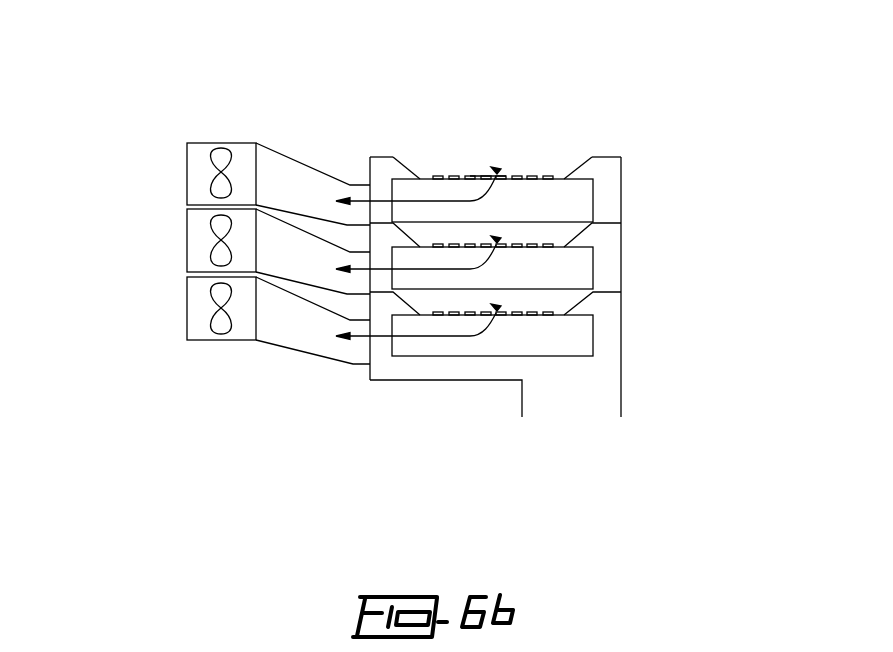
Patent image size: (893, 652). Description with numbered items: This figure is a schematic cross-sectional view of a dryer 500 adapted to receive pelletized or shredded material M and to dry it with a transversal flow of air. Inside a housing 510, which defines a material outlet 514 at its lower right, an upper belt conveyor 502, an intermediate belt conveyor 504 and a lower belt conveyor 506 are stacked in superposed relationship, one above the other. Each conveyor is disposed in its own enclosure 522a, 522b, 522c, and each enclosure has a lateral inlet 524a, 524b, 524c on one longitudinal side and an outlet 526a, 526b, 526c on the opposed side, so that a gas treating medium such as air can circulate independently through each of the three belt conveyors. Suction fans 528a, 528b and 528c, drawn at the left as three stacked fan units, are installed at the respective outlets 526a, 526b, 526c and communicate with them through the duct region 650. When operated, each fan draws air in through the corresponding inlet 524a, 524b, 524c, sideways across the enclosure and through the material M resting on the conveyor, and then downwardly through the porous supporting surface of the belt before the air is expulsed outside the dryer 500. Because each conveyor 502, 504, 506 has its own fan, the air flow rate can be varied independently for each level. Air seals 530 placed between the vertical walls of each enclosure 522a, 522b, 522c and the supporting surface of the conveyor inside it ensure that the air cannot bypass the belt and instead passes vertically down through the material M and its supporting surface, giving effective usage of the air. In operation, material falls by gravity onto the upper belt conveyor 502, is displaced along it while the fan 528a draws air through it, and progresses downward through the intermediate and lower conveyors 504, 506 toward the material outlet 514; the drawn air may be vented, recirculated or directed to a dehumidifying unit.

The dryer 500 is at (622, 384).
The upper belt conveyor 502 is at (583, 190).
The intermediate belt conveyor 504 is at (597, 272).
The lower belt conveyor 506 is at (595, 333).
The housing 510 is at (622, 200).
The material outlet 514 is at (570, 400).
The enclosure 522a is at (388, 162).
The enclosure 522b is at (382, 238).
The enclosure 522c is at (382, 370).
The lateral inlet 524a is at (497, 172).
The lateral inlet 524b is at (497, 241).
The lateral inlet 524c is at (497, 309).
The outlet 526a is at (338, 199).
The outlet 526b is at (340, 272).
The outlet 526c is at (338, 340).
The suction fan 528a is at (188, 182).
The suction fan 528b is at (188, 244).
The suction fan 528c is at (188, 315).
The air seal 530 is at (410, 245).
The plenum 650 is at (313, 253).
The material M is at (470, 178).